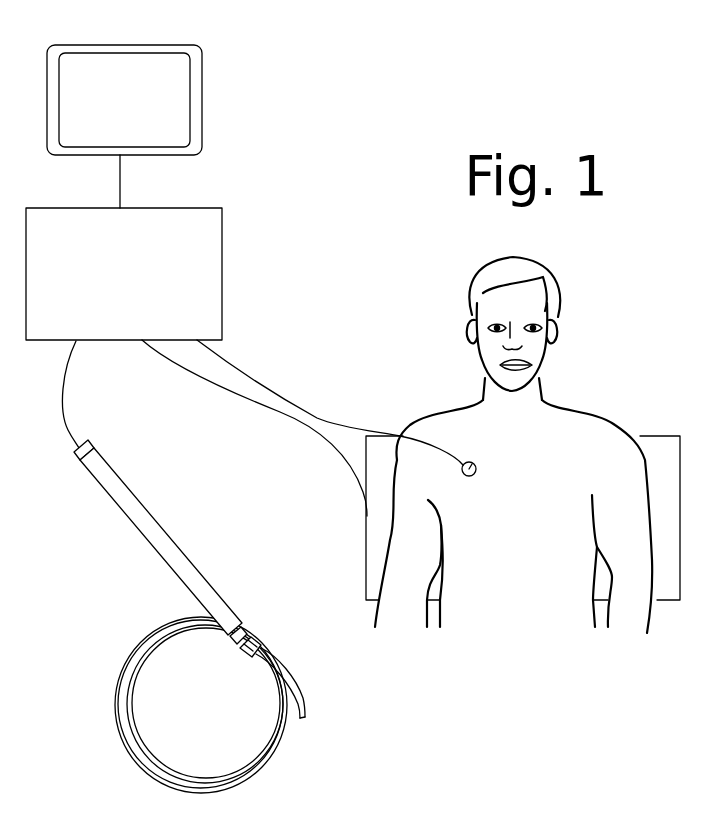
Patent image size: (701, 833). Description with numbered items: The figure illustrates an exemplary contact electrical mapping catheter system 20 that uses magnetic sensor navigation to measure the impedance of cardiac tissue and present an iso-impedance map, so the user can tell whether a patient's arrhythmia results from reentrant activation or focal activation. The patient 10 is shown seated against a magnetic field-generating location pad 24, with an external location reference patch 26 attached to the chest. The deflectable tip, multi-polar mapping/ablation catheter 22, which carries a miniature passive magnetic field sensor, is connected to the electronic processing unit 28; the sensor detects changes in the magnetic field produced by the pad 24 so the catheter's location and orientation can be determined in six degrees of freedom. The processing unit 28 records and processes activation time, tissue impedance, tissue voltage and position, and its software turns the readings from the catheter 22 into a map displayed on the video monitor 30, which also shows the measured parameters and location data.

The patient 10 is at (568, 458).
The system 20 is at (352, 263).
The mapping/ablation catheter 22 is at (128, 518).
The magnetic field-generating location pad 24 is at (383, 535).
The external location reference patch 26 is at (470, 476).
The electronic processing unit 28 is at (210, 235).
The video display or monitor 30 is at (180, 72).